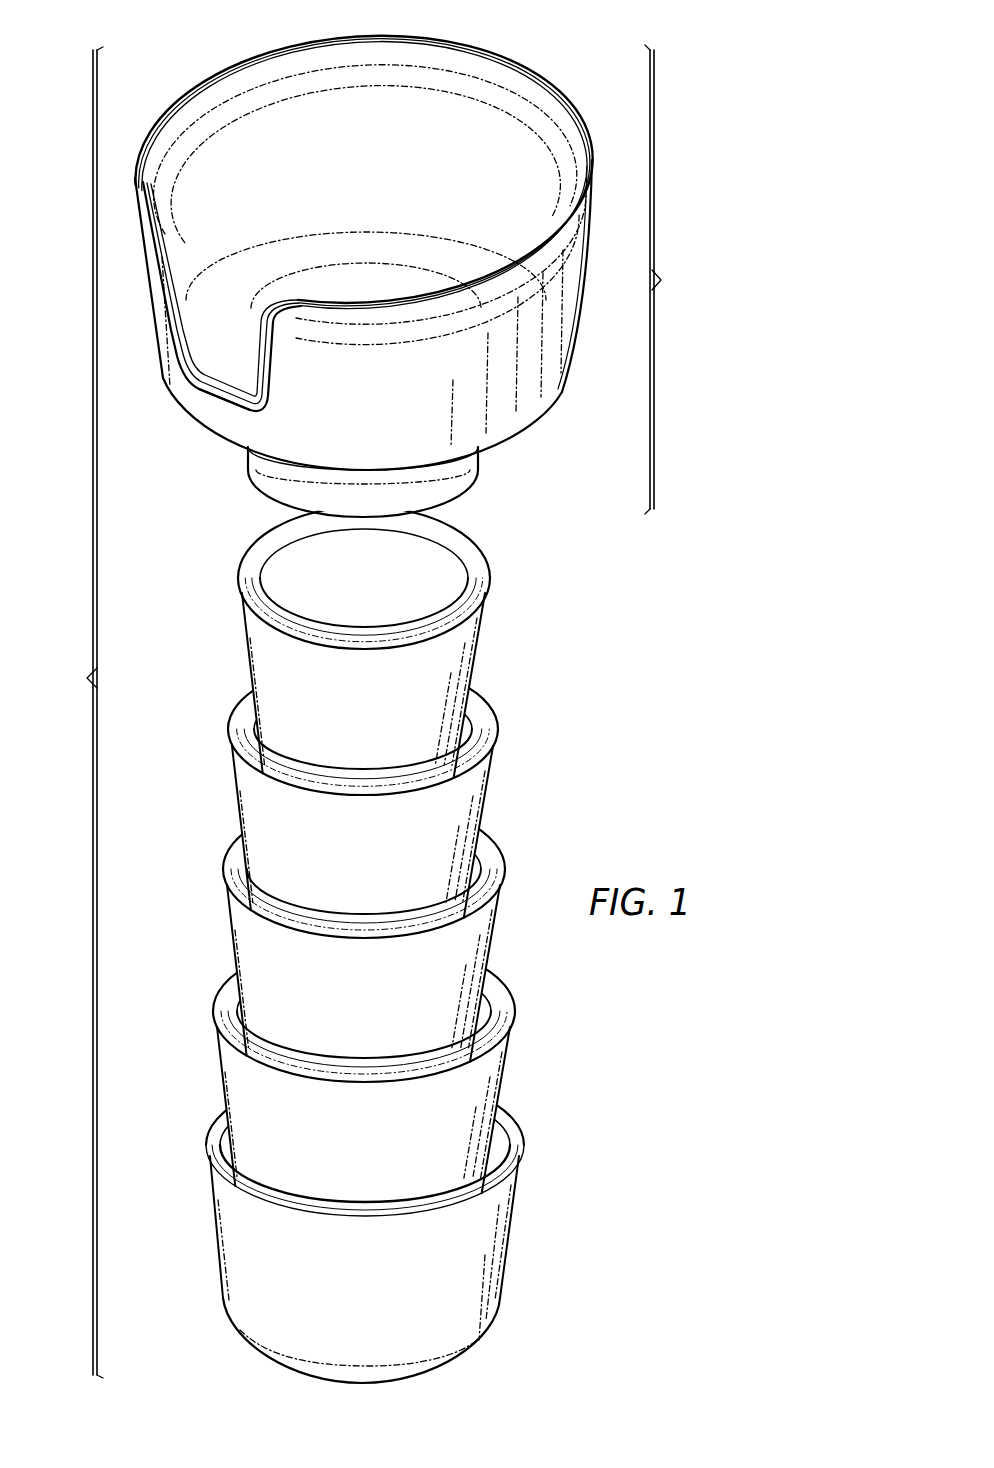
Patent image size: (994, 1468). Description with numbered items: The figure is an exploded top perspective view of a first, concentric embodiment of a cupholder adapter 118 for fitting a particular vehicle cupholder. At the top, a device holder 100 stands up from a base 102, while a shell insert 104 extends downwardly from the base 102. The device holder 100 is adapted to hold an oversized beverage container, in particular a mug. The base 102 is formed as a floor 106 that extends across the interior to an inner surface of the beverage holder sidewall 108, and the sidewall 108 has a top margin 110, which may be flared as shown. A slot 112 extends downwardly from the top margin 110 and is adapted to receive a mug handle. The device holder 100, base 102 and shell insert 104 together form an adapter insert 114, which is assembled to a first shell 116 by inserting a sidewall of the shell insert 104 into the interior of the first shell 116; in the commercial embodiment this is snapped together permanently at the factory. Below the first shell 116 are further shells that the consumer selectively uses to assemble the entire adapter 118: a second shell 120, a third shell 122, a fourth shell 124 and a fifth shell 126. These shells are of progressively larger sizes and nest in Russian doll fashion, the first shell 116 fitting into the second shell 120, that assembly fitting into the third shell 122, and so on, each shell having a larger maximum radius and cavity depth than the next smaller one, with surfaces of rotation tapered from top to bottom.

The device holder 100 is at (364, 264).
The base 102 is at (333, 294).
The shell insert 104 is at (460, 477).
The floor 106 is at (243, 313).
The beverage holder sidewall 108 is at (345, 161).
The top margin 110 is at (200, 88).
The slot 112 is at (212, 383).
The adapter insert 114 is at (676, 279).
The first shell 116 is at (345, 706).
The cupholder adapter 118 is at (72, 712).
The second shell 120 is at (345, 854).
The third shell 122 is at (345, 1007).
The fourth shell 124 is at (345, 1155).
The fifth shell 126 is at (345, 1305).